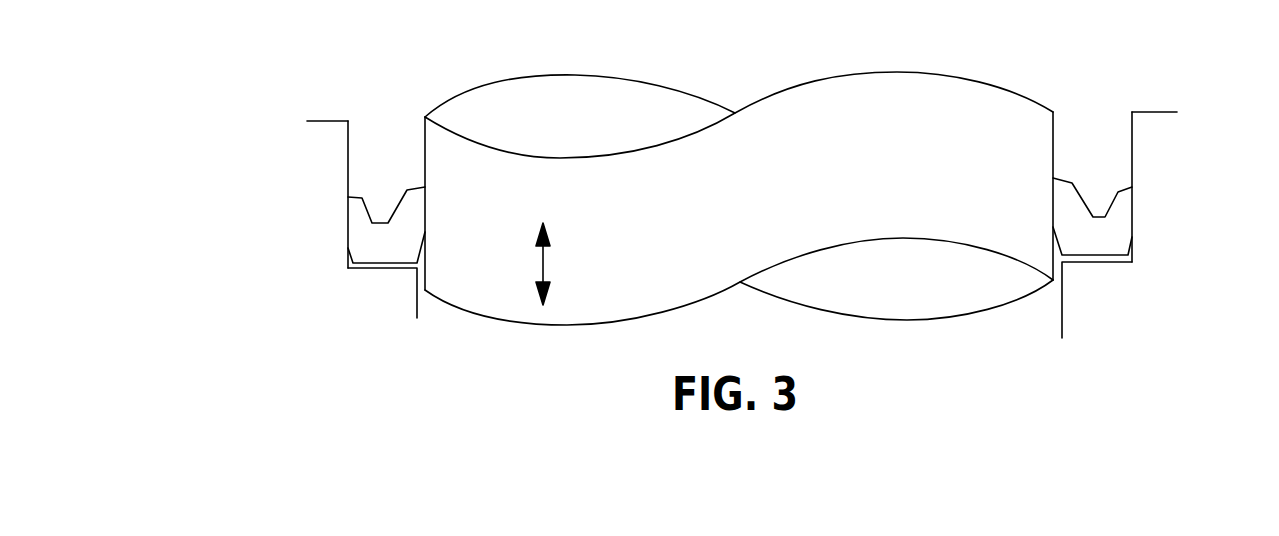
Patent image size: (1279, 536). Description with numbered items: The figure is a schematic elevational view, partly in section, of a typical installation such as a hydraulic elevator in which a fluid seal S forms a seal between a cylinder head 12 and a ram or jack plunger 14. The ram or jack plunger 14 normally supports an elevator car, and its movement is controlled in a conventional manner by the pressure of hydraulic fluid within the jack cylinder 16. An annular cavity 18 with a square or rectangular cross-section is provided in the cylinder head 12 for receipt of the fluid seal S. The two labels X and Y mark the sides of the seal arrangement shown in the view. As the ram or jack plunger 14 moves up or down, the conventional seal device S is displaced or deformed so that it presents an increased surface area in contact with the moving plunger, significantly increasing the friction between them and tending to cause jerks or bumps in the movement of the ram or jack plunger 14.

The cylinder head 12 is at (323, 161).
The ram or jack plunger 14 is at (628, 224).
The jack cylinder 16 is at (338, 309).
The annular cavity 18 is at (350, 128).
The fluid seal S is at (293, 233).
The direction X is at (1036, 155).
The direction Y is at (1152, 165).